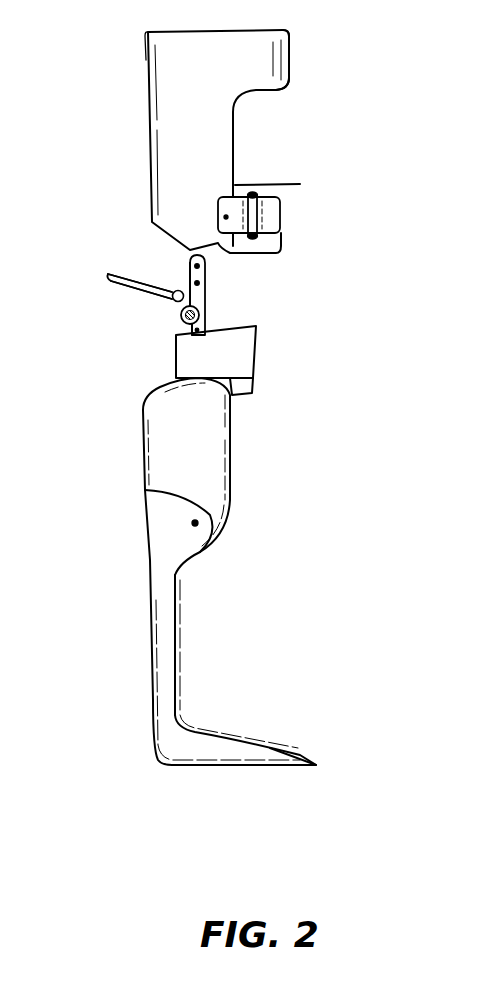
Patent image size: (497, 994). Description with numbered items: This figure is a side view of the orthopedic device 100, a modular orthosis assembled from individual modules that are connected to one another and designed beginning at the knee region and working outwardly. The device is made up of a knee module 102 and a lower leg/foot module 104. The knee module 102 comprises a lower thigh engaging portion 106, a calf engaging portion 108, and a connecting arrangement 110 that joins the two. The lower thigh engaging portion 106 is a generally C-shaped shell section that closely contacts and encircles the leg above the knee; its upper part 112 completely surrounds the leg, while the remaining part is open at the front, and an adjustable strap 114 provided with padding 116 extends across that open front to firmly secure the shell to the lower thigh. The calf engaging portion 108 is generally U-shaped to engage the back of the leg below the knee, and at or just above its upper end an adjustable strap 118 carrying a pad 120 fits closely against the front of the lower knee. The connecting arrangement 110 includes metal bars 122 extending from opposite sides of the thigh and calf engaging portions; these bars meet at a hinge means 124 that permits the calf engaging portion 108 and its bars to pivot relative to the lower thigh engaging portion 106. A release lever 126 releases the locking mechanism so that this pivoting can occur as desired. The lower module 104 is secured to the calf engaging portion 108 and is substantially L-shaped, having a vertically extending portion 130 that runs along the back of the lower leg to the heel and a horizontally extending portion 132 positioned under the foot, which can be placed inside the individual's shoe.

The orthopedic device 100 is at (300, 260).
The knee module 102 is at (172, 328).
The lower leg/foot module 104 is at (174, 688).
The lower thigh engaging portion 106 is at (218, 137).
The calf engaging portion 108 is at (232, 478).
The connecting arrangement 110 is at (207, 287).
The upper part 112 is at (287, 54).
The adjustable strap 114 is at (284, 213).
The padding 116 is at (283, 185).
The adjustable strap 118 is at (255, 352).
The pad 120 is at (256, 380).
The metal bars 122 is at (186, 272).
The hinge means 124 is at (180, 312).
The release lever 126 is at (108, 274).
The vertically extending portion 130 is at (178, 622).
The horizontally extending portion 132 is at (290, 757).